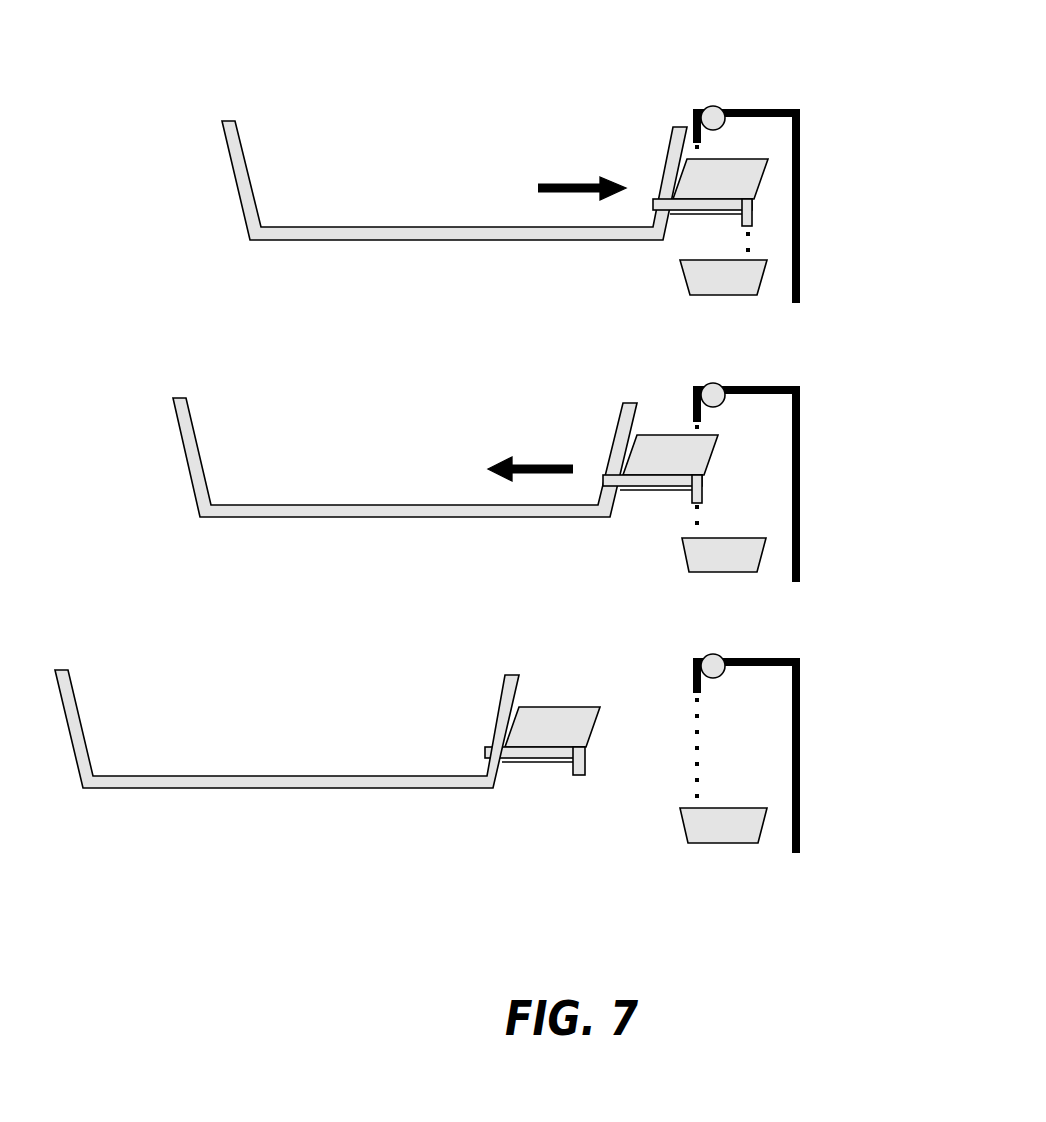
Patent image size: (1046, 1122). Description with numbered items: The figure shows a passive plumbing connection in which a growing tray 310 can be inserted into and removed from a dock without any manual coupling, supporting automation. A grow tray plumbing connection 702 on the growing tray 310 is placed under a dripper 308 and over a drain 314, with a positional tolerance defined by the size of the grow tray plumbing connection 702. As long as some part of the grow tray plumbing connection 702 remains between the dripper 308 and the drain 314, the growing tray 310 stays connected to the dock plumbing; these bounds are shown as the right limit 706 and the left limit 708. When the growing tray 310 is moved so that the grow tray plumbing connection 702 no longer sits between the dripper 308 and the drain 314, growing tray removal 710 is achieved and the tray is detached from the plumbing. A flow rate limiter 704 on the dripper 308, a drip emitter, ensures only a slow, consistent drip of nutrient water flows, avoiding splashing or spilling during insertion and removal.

The dripper 308 is at (737, 110).
The growing tray 310 is at (250, 168).
The drain 314 is at (753, 220).
The grow tray plumbing connection 702 is at (768, 157).
The flow rate limiter 704 is at (713, 106).
The right limit 706 is at (578, 183).
The left limit 708 is at (542, 463).
The growing tray removal 710 is at (325, 759).